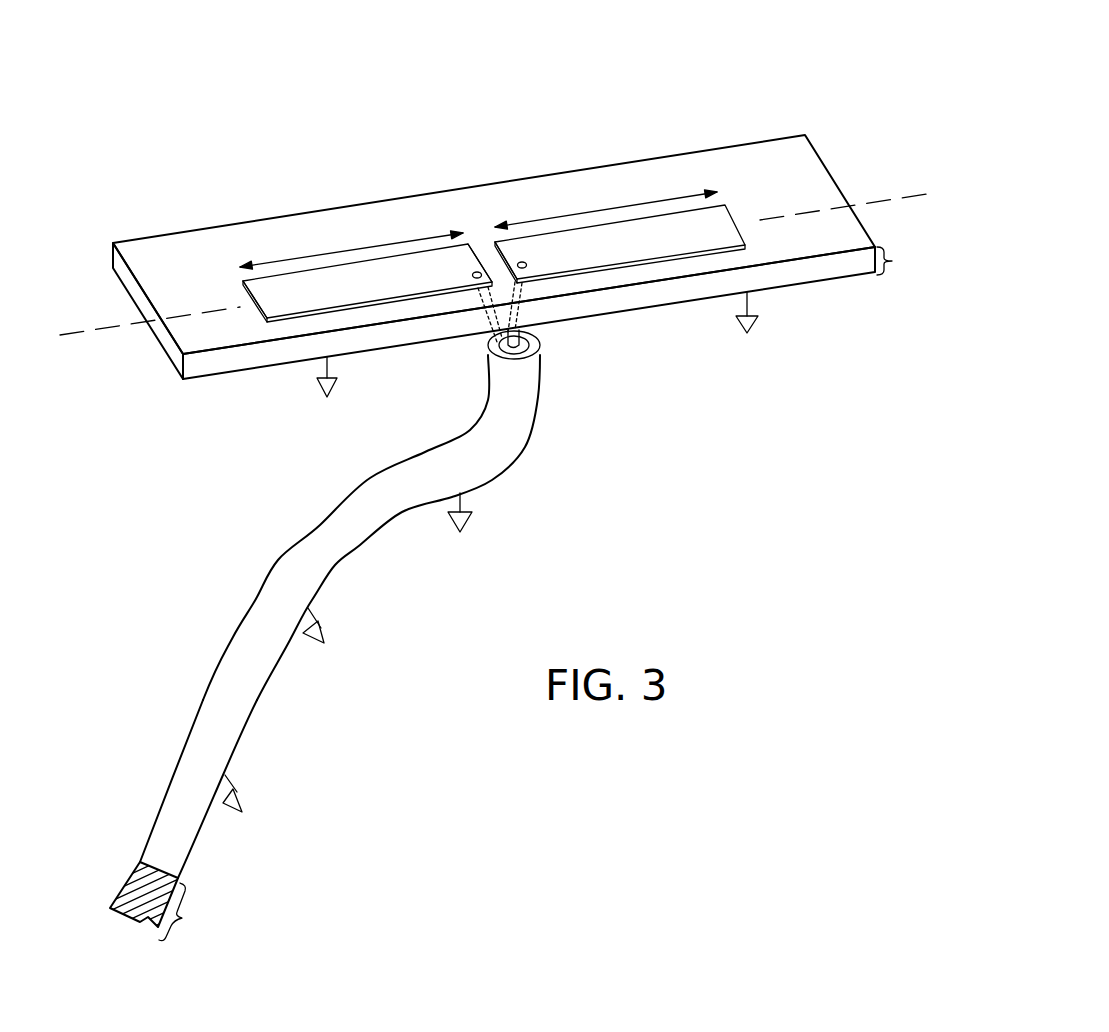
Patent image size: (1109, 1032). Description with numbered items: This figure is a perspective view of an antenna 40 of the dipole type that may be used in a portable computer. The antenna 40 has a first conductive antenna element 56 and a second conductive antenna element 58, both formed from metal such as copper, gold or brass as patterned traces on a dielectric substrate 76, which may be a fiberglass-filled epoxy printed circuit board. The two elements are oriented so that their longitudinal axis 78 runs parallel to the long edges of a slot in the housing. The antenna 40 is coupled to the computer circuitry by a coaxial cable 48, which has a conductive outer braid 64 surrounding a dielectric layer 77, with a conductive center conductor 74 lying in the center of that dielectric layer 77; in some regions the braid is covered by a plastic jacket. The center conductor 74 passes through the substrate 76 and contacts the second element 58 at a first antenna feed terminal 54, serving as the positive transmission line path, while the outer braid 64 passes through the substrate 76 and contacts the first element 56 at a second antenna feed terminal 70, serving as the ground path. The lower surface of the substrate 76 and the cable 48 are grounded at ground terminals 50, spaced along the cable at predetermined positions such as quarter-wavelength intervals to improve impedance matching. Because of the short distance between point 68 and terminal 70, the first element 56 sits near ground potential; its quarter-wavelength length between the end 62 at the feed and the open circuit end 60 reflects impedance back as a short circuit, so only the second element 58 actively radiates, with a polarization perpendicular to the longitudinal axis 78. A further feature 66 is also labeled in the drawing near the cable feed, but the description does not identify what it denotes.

The antenna 40 is at (725, 70).
The coaxial cable 48 is at (233, 720).
The ground terminals 50 is at (758, 320).
The first antenna feed terminal 54 is at (525, 263).
The first conductive antenna element 56 is at (277, 306).
The second conductive antenna element 58 is at (658, 247).
The open circuit end 60 is at (243, 291).
The end 62 is at (492, 280).
The conductive outer braid 64 is at (525, 392).
The center conductor 66 is at (478, 319).
The point 68 is at (492, 392).
The second antenna feed terminal 70 is at (443, 281).
The conductive center conductor 74 is at (520, 290).
The substrate 76 is at (901, 262).
The dielectric layer 77 is at (533, 347).
The longitudinal axis 78 is at (108, 322).